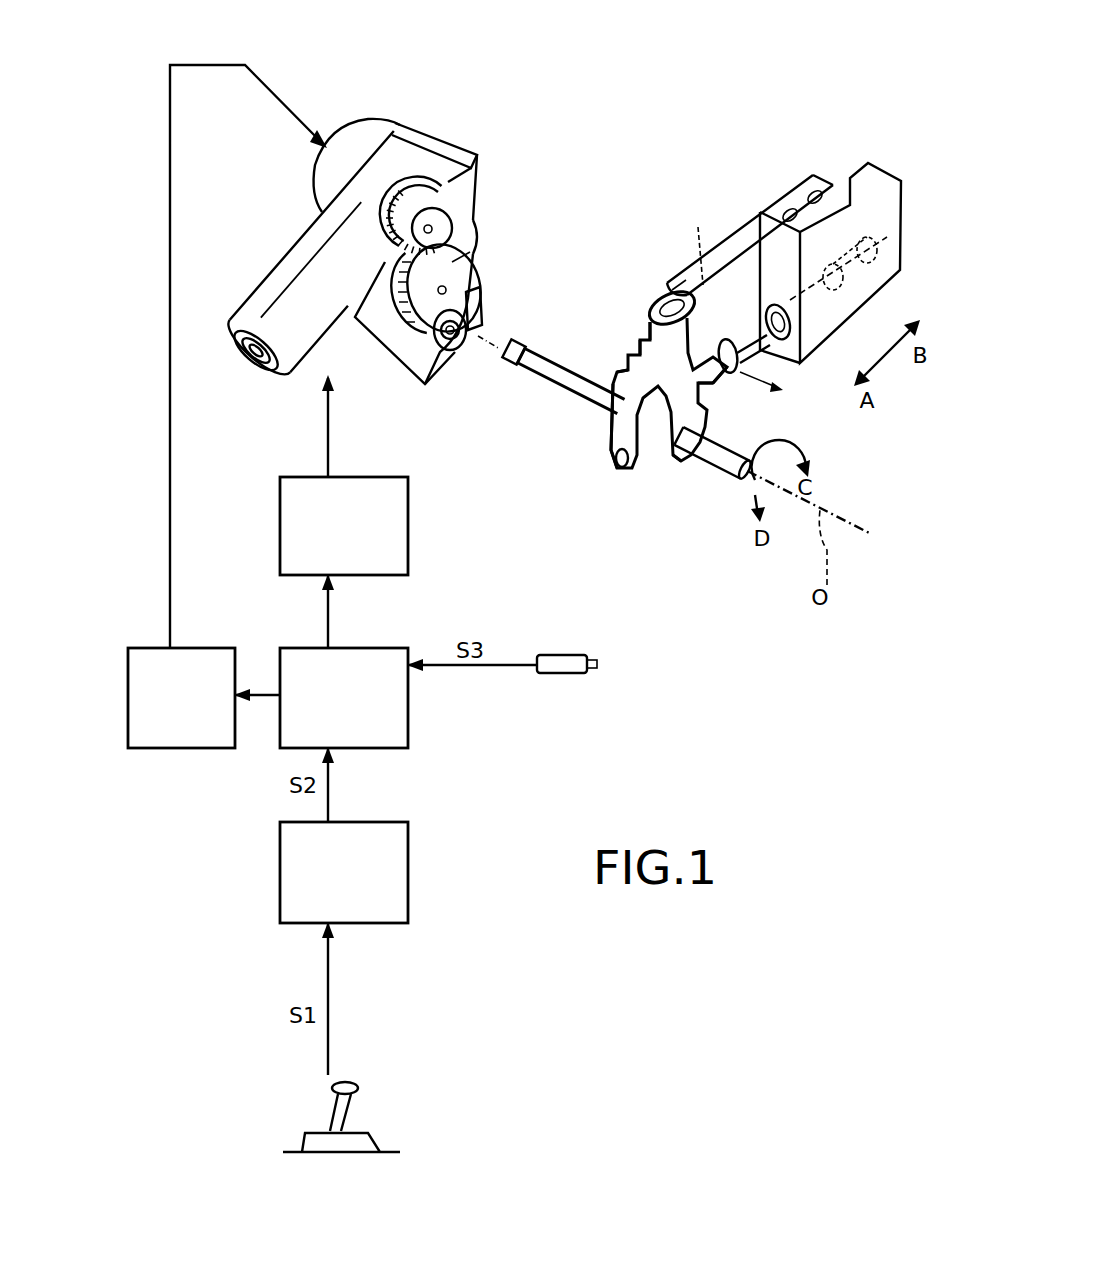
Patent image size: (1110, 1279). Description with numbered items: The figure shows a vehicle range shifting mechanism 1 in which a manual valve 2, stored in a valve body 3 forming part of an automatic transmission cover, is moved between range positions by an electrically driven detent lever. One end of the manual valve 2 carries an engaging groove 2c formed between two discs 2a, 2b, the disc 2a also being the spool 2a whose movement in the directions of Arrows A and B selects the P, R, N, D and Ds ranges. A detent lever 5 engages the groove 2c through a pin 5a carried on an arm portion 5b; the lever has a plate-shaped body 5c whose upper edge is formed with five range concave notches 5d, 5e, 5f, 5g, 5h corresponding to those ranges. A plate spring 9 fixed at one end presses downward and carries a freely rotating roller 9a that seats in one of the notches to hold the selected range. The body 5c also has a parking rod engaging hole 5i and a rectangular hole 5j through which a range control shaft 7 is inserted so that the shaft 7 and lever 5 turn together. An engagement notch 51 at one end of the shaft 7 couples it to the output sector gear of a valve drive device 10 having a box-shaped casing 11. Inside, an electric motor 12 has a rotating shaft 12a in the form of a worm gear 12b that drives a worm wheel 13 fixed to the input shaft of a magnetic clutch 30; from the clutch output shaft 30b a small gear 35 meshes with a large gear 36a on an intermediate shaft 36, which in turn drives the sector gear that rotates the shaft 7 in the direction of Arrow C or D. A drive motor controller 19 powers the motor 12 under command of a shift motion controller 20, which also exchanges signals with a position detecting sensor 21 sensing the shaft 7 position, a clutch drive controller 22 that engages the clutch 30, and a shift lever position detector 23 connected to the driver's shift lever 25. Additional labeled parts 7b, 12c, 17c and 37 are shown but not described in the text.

The range shifting mechanism 1 is at (608, 88).
The manual valve 2 is at (891, 279).
The spool 2a is at (803, 358).
The disc 2b is at (738, 358).
The engaging groove 2c is at (734, 338).
The valve body 3 is at (890, 150).
The detent lever 5 is at (630, 325).
The pin 5a is at (708, 398).
The arm portion 5b is at (713, 410).
The plate-shaped body 5c is at (613, 432).
The range concave notch 5d is at (695, 242).
The range concave notch 5e is at (670, 290).
The range concave notch 5f is at (650, 330).
The range concave notch 5g is at (640, 345).
The range concave notch 5h is at (613, 375).
The parking rod engaging hole 5i is at (627, 447).
The rectangular hole 5j is at (693, 457).
The range control shaft 7 is at (577, 380).
The shift shaft end portion 7b is at (713, 480).
The plate spring 9 is at (742, 218).
The roller 9a is at (685, 285).
The valve drive device 10 is at (438, 105).
The casing 11 is at (477, 208).
The electric motor 12 is at (285, 247).
The rotating shaft 12a is at (442, 143).
The worm gear 12b is at (434, 145).
The motor case 12c is at (318, 340).
The worm wheel 13 is at (458, 186).
The output shaft 17c is at (452, 325).
The drive motor controller 19 is at (378, 477).
The shift motion controller 20 is at (388, 648).
The position detecting sensor 21 is at (575, 655).
The clutch drive controller 22 is at (213, 648).
The shift lever position detector 23 is at (392, 822).
The shift lever 25 is at (385, 1102).
The magnetic clutch 30 is at (346, 138).
The output shaft 30b is at (468, 228).
The small gear 35 is at (470, 180).
The intermediate shaft 36 is at (472, 283).
The large gear 36a is at (467, 255).
The bracket 37 is at (478, 313).
The engagement notch 51 is at (505, 365).